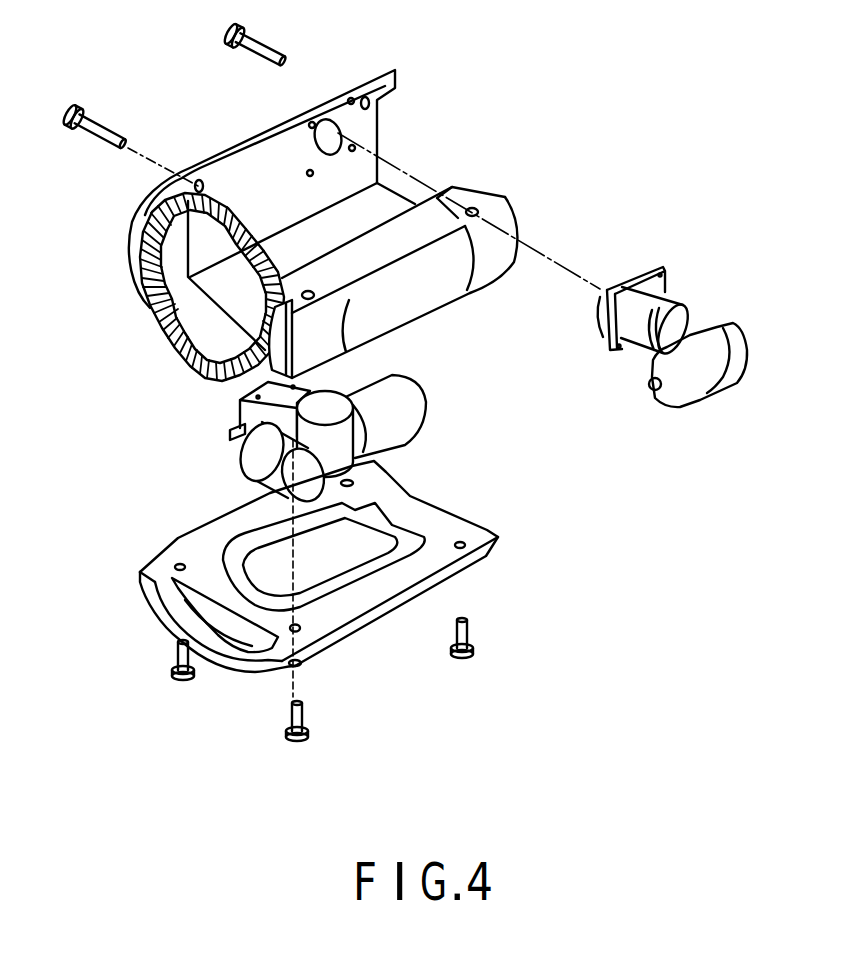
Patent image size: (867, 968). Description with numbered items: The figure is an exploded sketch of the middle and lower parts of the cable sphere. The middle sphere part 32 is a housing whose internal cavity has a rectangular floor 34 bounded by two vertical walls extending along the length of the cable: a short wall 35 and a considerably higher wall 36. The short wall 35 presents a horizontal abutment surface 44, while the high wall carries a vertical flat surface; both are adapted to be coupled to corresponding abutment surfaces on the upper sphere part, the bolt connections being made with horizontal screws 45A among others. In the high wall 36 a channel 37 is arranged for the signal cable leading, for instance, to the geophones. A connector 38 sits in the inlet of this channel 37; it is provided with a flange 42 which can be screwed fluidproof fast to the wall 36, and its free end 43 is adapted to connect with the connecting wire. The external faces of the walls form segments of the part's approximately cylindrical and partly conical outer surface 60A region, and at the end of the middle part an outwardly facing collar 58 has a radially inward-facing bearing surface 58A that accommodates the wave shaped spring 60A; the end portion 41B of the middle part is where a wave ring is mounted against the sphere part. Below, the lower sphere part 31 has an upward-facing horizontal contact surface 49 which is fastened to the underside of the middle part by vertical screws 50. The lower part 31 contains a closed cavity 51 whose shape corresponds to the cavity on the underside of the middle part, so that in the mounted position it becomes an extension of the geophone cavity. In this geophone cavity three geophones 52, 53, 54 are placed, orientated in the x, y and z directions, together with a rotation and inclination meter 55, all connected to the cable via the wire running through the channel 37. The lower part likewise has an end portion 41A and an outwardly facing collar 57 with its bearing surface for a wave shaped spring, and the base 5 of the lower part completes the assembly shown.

The base 5 is at (178, 618).
The lower sphere part 31 is at (458, 586).
The middle sphere part 32 is at (434, 311).
The rectangular floor 34 is at (383, 203).
The short wall 35 is at (436, 188).
The high wall 36 is at (350, 92).
The channel 37 is at (339, 131).
The connector 38 is at (682, 293).
The end portion 41A is at (228, 630).
The end portion 41B is at (148, 240).
The flange 42 is at (637, 280).
The free end 43 is at (657, 388).
The horizontal abutment surface 44 is at (452, 232).
The horizontal screws 45A is at (92, 134).
The horizontal contact surface 49 is at (374, 603).
The vertical screws 50 is at (305, 717).
The closed cavity 51 is at (372, 539).
The geophone 52 is at (258, 471).
The geophone 53 is at (336, 401).
The geophone 54 is at (410, 410).
The rotation and inclination meter 55 is at (240, 417).
The outwardly facing collar 57 is at (147, 594).
The outwardly facing collar 58 is at (140, 208).
The bearing surface 58A is at (492, 197).
The wave shaped spring 60A is at (163, 306).